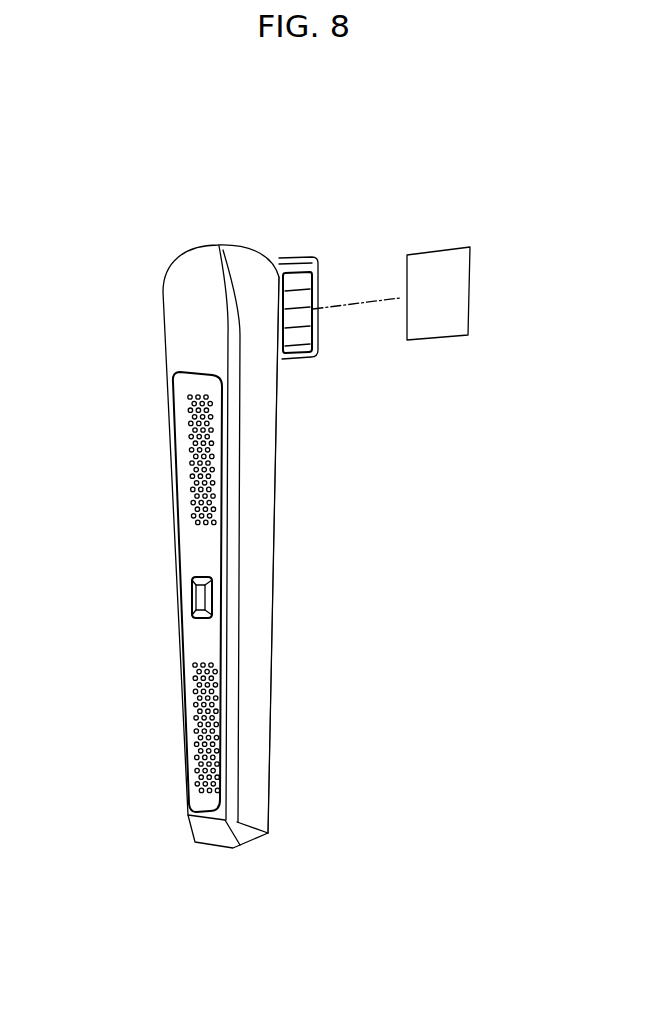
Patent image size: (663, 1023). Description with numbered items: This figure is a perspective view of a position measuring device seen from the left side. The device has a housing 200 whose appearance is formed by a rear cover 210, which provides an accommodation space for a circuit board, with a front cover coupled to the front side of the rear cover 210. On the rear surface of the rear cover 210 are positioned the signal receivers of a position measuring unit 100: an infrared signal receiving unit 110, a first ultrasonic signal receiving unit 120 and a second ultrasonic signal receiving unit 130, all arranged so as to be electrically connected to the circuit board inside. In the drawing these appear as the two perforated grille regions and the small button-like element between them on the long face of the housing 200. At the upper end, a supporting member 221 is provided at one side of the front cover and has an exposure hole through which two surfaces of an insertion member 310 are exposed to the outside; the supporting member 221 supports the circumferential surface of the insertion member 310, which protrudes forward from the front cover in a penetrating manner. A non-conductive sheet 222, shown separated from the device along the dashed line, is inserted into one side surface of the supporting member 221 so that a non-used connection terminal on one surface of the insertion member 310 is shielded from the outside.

The position measuring unit 100 is at (79, 730).
The infrared signal receiving unit 110 is at (194, 597).
The first ultrasonic signal receiving unit 120 is at (197, 463).
The second ultrasonic signal receiving unit 130 is at (193, 715).
The housing 200 is at (162, 259).
The rear cover 210 is at (263, 578).
The supporting member 221 is at (297, 262).
The non-conductive sheet 222 is at (457, 281).
The insertion member 310 is at (302, 318).